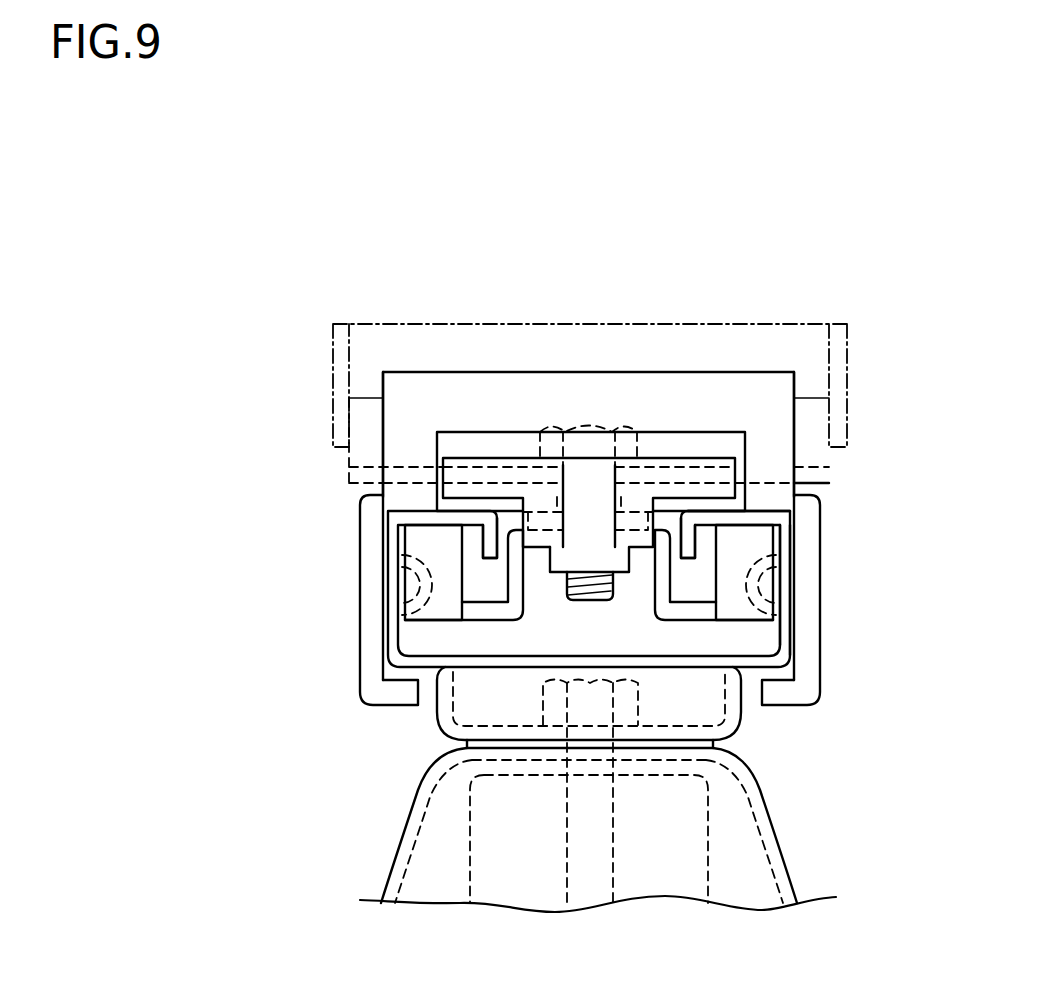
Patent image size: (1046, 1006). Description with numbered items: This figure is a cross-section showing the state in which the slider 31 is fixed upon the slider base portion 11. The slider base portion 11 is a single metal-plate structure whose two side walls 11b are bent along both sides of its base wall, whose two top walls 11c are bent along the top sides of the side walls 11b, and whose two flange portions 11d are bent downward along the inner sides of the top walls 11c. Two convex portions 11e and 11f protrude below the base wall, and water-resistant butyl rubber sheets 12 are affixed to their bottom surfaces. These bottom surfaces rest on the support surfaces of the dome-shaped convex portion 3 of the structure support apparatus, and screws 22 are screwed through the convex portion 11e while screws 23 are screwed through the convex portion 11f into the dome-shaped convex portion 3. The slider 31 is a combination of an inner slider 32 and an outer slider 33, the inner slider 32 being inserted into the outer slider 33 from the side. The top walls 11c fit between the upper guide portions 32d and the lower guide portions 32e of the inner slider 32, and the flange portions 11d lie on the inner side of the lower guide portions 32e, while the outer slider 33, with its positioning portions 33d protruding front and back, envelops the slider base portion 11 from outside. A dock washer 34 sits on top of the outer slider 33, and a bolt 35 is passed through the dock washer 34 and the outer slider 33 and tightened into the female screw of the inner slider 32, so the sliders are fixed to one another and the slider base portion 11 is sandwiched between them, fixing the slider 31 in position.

The dome-shaped convex portion 3 is at (783, 850).
The slider base portion 11 is at (649, 514).
The side walls 11b is at (783, 623).
The top walls 11c is at (760, 515).
The flange portions 11d is at (658, 510).
The convex portion 11e is at (738, 718).
The convex portion 11f is at (590, 744).
The butyl rubber sheets 12 is at (455, 748).
The screws 22 is at (607, 863).
The screws 23 is at (590, 703).
The slider 31 is at (228, 495).
The inner slider 32 is at (504, 432).
The upper guide portions 32d is at (496, 487).
The lower guide portions 32e is at (432, 545).
The outer slider 33 is at (532, 455).
The positioning portions 33d is at (558, 390).
The dock washer 34 is at (790, 323).
The bolt 35 is at (590, 420).